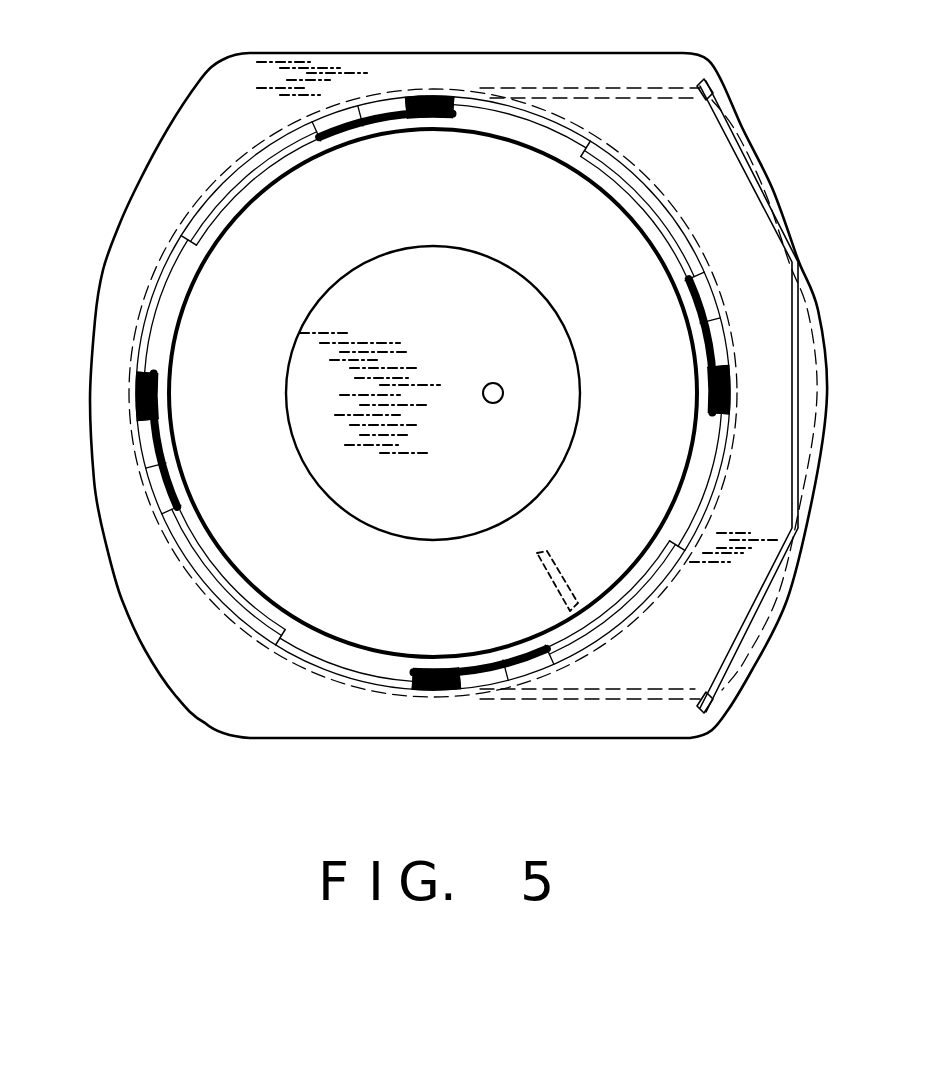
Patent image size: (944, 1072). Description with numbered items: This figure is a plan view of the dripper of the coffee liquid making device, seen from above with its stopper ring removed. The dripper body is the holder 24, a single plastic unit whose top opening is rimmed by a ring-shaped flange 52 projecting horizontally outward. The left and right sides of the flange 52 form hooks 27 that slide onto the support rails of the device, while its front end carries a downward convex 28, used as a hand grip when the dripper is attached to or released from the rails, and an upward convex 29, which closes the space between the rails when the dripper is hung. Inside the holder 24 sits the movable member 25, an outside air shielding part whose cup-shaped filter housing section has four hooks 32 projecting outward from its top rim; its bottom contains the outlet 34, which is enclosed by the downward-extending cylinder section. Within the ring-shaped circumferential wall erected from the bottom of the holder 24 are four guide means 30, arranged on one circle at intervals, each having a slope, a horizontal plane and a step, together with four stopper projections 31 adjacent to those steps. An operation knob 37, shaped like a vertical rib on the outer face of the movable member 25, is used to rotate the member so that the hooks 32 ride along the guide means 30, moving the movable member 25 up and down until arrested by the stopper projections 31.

The holder 24 is at (103, 273).
The movable member 25 is at (257, 567).
The hooks 27 is at (516, 85).
The downward convex 28 is at (818, 397).
The upward convex 29 is at (800, 468).
The guide means 30 is at (273, 153).
The stopper projections 31 is at (430, 97).
The hooks 32 is at (578, 140).
The outlet 34 is at (505, 393).
The operation knob 37 is at (560, 585).
The flange 52 is at (720, 628).